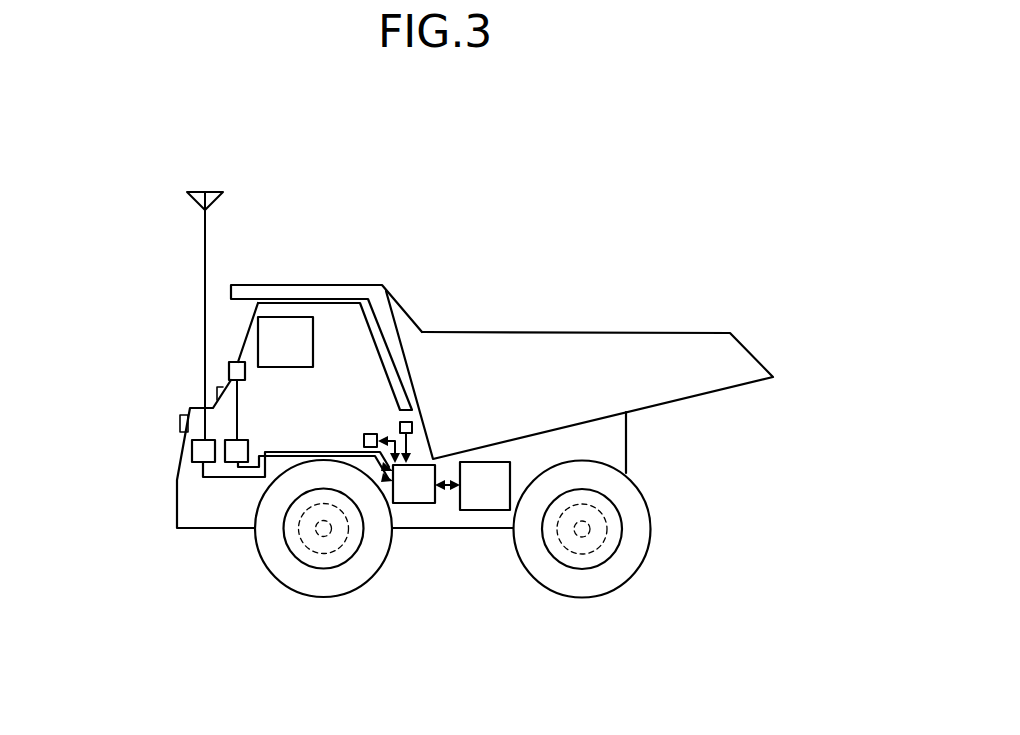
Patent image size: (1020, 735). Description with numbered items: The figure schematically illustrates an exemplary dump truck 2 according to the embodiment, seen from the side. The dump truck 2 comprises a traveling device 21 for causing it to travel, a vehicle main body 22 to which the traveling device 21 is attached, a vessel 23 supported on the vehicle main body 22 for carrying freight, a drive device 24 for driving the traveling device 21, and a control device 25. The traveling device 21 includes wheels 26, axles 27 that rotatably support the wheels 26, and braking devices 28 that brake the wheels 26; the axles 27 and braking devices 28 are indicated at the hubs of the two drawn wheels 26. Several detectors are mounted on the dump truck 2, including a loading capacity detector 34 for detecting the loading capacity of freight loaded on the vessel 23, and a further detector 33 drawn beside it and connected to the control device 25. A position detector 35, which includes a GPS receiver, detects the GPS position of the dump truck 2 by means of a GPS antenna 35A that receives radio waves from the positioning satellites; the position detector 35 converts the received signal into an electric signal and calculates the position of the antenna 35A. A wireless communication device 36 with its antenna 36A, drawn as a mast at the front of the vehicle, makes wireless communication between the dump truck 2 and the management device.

The dump truck 2 is at (624, 159).
The traveling device 21 is at (656, 509).
The vehicle main body 22 is at (634, 455).
The vessel 23 is at (481, 331).
The drive device 24 is at (483, 511).
The control device 25 is at (415, 504).
The wheels 26 is at (328, 597).
The axles 27 is at (332, 534).
The braking devices 28 is at (305, 555).
The speed sensor 33 is at (363, 440).
The loading capacity detector 34 is at (399, 426).
The position detector 35 is at (249, 443).
The GPS antenna 35A is at (229, 367).
The wireless communication device 36 is at (191, 447).
The antenna 36A is at (210, 192).